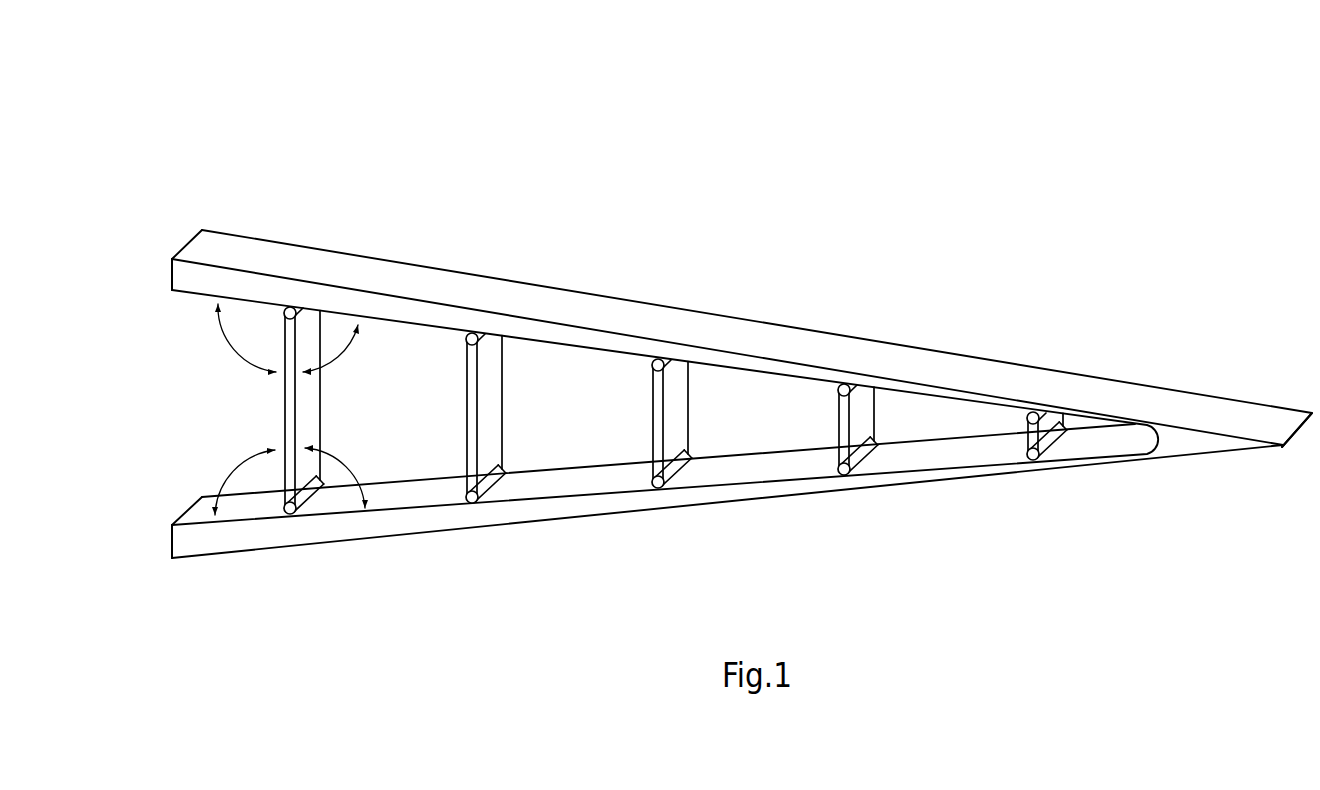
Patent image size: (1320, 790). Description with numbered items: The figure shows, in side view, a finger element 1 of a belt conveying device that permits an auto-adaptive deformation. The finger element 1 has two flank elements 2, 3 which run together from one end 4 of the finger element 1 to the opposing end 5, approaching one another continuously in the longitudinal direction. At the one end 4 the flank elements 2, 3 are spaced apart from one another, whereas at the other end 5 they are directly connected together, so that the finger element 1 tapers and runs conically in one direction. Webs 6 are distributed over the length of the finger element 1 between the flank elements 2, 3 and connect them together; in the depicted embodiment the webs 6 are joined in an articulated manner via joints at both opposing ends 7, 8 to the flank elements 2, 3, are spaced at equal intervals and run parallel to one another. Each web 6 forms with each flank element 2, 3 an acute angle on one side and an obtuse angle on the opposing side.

The finger element 1 is at (482, 116).
The flank element 2 is at (617, 308).
The flank element 3 is at (403, 524).
The end of the finger element 4 is at (147, 261).
The opposing end of the finger element 5 is at (1271, 326).
The web 6 is at (307, 411).
The end of the web 7 is at (291, 307).
The opposing end of the web 8 is at (290, 515).